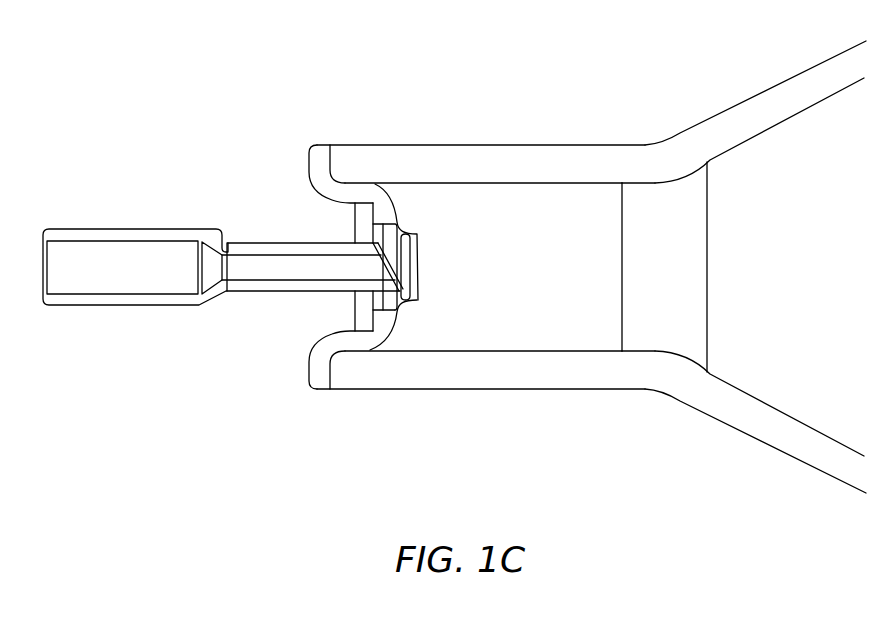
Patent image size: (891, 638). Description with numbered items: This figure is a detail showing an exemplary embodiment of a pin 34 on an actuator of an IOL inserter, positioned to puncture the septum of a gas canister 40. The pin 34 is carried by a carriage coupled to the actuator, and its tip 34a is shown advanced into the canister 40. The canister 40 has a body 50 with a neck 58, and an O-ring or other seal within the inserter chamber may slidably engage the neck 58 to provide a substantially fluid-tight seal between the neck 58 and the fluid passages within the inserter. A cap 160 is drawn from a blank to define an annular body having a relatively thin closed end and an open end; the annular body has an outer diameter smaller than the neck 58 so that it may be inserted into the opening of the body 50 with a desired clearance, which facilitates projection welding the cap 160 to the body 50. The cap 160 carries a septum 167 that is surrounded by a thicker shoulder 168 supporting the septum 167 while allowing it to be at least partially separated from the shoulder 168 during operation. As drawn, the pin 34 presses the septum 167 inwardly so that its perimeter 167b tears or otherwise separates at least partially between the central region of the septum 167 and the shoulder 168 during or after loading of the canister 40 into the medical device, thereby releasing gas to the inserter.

The pin 34 is at (265, 298).
The beveled tip of catheter tube 34a is at (374, 250).
The canister 40 is at (742, 100).
The body 50 is at (783, 452).
The neck 58 is at (580, 390).
The cap 160 is at (322, 136).
The septum 167 is at (418, 272).
The perimeter 167b is at (404, 303).
The shoulder 168 is at (377, 343).